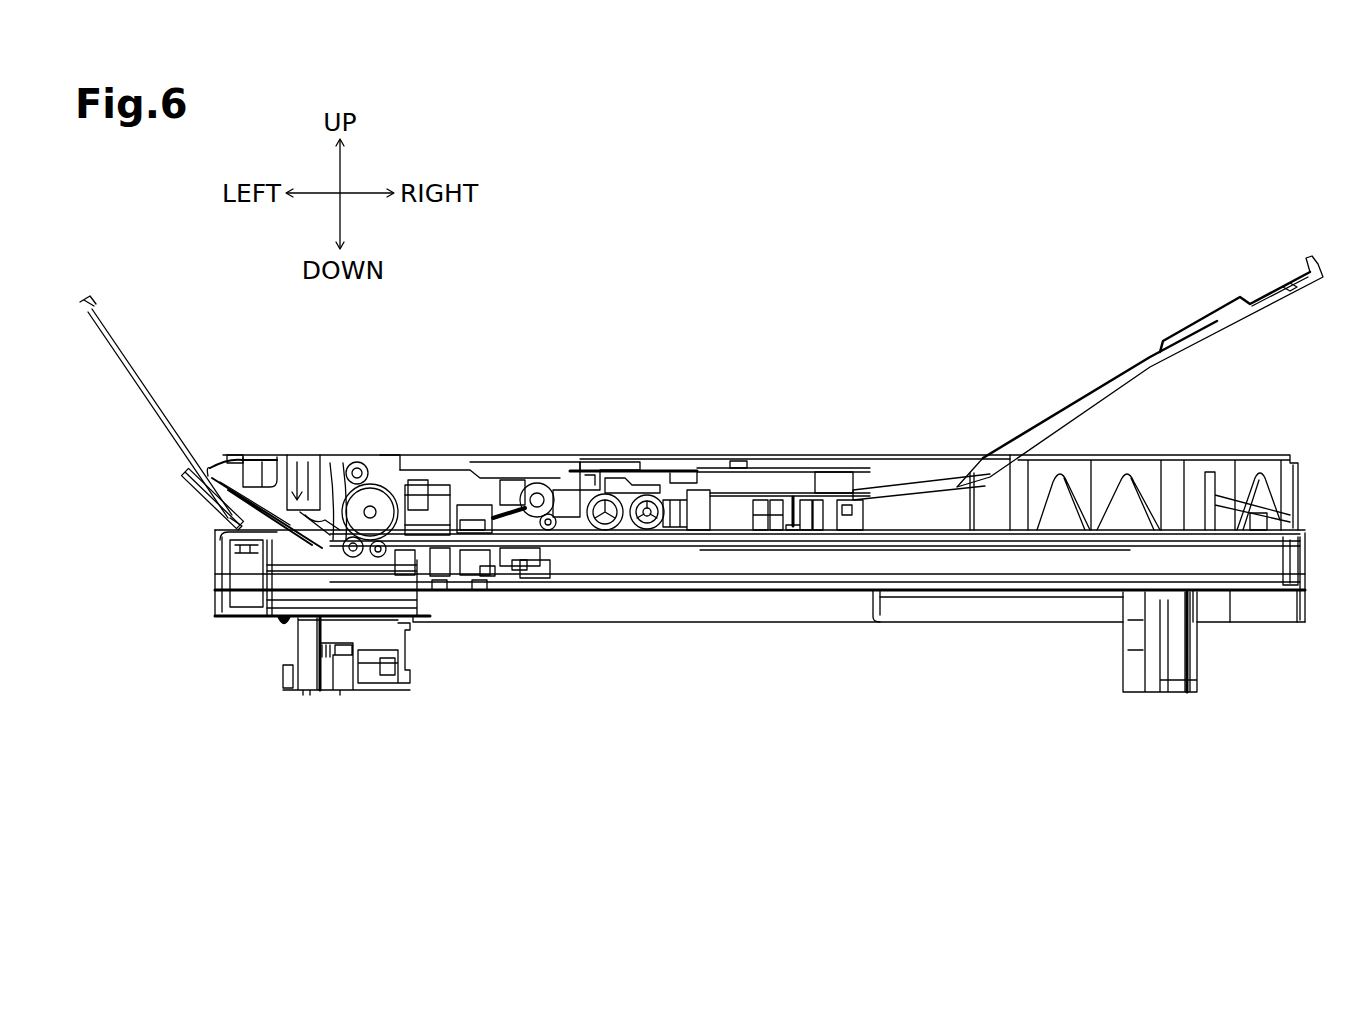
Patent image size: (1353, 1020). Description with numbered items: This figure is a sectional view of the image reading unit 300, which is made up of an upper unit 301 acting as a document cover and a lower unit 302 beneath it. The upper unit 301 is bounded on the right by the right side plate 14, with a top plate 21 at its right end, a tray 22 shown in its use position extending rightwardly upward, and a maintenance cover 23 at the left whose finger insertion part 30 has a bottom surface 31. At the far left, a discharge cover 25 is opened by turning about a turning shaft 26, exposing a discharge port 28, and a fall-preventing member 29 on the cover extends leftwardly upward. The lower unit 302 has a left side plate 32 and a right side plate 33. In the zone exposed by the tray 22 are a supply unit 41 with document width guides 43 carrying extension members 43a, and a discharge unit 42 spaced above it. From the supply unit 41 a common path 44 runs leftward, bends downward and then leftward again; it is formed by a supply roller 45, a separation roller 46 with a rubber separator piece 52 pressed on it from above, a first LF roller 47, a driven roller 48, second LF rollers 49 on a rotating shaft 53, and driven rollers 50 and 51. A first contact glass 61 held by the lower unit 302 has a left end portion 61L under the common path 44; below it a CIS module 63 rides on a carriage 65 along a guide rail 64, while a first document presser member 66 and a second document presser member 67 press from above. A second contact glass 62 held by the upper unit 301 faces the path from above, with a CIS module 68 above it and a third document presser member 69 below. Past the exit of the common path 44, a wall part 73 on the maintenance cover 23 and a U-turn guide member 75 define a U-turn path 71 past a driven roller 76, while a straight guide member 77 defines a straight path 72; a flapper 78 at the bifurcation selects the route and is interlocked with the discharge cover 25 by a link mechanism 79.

The right side plate 14 is at (1298, 490).
The top plate 21 is at (1248, 455).
The tray 22 is at (1156, 362).
The maintenance cover 23 is at (392, 462).
The discharge cover 25 is at (190, 480).
The turning shaft 26 is at (214, 516).
The discharge port 28 is at (238, 466).
The fall-preventing member 29 is at (112, 330).
The finger insertion part 30 is at (257, 455).
The bottom surface 31 is at (266, 460).
The left side plate 32 is at (220, 595).
The right side plate 33 is at (1305, 582).
The supply unit 41 is at (868, 492).
The discharge unit 42 is at (620, 472).
The document width guide 43 is at (822, 472).
The extension member 43a is at (770, 468).
The common path 44 is at (562, 482).
The supply roller 45 is at (649, 529).
The separation roller 46 is at (606, 530).
The first LF roller 47 is at (527, 487).
The driven roller 48 is at (553, 530).
The second LF roller 49 is at (398, 490).
The driven roller 50 is at (404, 562).
The driven roller 51 is at (288, 690).
The separator piece 52 is at (587, 475).
The rotating shaft 53 is at (373, 600).
The first contact glass 61 is at (745, 548).
The left end portion of first contact glass 61L is at (536, 592).
The second contact glass 62 is at (441, 500).
The CIS module 63 is at (489, 576).
The guide rail 64 is at (950, 584).
The carriage 65 is at (521, 568).
The first document presser member 66 is at (1124, 520).
The second document presser member 67 is at (480, 590).
The CIS module 68 is at (424, 494).
The third document presser member 69 is at (440, 592).
The U-turn path 71 is at (362, 462).
The straight path 72 is at (292, 456).
The wall part 73 is at (333, 478).
The U-turn guide member 75 is at (478, 465).
The driven roller 76 is at (384, 485).
The straight guide member 77 is at (262, 577).
The flapper 78 is at (340, 550).
The link mechanism 79 is at (300, 490).
The image reading unit 300 is at (806, 786).
The upper unit 301 is at (1280, 442).
The lower unit 302 is at (1262, 644).